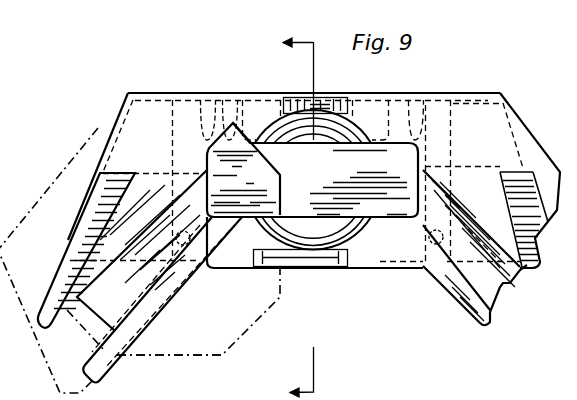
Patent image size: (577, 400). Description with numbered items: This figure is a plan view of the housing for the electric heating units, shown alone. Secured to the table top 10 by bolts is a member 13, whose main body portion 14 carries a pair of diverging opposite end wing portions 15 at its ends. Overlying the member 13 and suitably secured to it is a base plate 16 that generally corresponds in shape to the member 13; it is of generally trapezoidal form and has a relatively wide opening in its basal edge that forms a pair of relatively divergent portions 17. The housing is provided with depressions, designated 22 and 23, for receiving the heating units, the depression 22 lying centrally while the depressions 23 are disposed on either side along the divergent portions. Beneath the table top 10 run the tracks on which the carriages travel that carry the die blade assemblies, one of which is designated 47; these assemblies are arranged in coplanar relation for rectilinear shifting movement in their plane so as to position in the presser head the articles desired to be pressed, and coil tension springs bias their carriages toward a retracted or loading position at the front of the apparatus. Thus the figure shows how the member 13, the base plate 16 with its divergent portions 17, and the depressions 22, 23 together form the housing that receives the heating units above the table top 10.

The table top 10 is at (278, 216).
The member 13 is at (367, 107).
The main body portion 14 is at (254, 107).
The diverging opposite end wing portions 15 is at (96, 212).
The base plate 16 is at (76, 158).
The divergent portions 17 is at (528, 210).
The depression 22 is at (315, 183).
The depressions 23 is at (164, 277).
The die blade assembly 47 is at (164, 358).